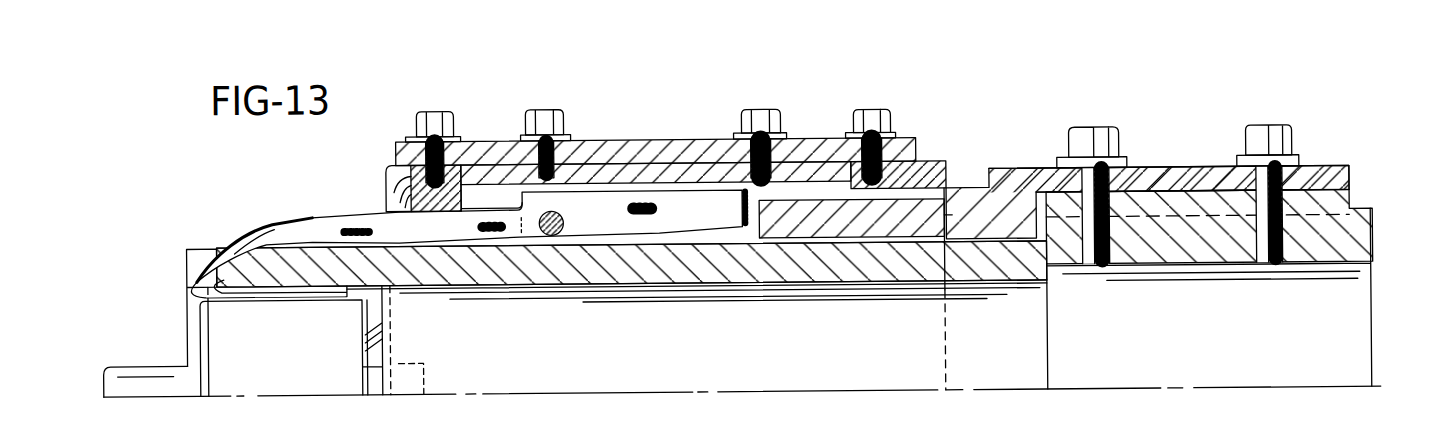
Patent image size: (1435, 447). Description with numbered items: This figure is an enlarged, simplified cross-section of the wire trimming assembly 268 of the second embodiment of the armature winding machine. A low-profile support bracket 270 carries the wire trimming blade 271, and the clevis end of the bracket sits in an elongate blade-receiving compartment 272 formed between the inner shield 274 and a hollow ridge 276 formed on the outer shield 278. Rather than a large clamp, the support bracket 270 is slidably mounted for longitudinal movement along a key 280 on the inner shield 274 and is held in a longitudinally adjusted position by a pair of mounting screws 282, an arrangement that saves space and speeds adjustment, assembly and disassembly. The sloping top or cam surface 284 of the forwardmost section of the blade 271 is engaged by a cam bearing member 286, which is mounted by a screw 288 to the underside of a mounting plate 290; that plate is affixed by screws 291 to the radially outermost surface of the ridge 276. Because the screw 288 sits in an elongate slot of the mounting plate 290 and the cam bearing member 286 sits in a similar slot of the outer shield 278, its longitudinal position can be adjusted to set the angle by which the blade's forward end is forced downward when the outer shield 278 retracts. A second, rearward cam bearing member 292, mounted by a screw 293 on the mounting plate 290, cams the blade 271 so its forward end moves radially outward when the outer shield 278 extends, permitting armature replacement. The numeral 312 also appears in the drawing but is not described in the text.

The wire trimming assembly 268 is at (513, 101).
The support bracket 270 is at (985, 199).
The wire trimming blade 271 is at (296, 215).
The blade-receiving compartment 272 is at (490, 195).
The inner shield 274 is at (758, 367).
The hollow ridge 276 is at (610, 162).
The outer shield 278 is at (945, 350).
The key 280 is at (1196, 200).
The mounting screws 282 is at (1253, 127).
The cam surface 284 is at (360, 213).
The cam bearing member 286 is at (417, 170).
The screw 288 is at (428, 112).
The mounting plate 290 is at (662, 138).
The screws 291 is at (560, 110).
The rearward cam bearing member 292 is at (917, 140).
The screw 293 is at (870, 110).
The base 312 is at (743, 416).